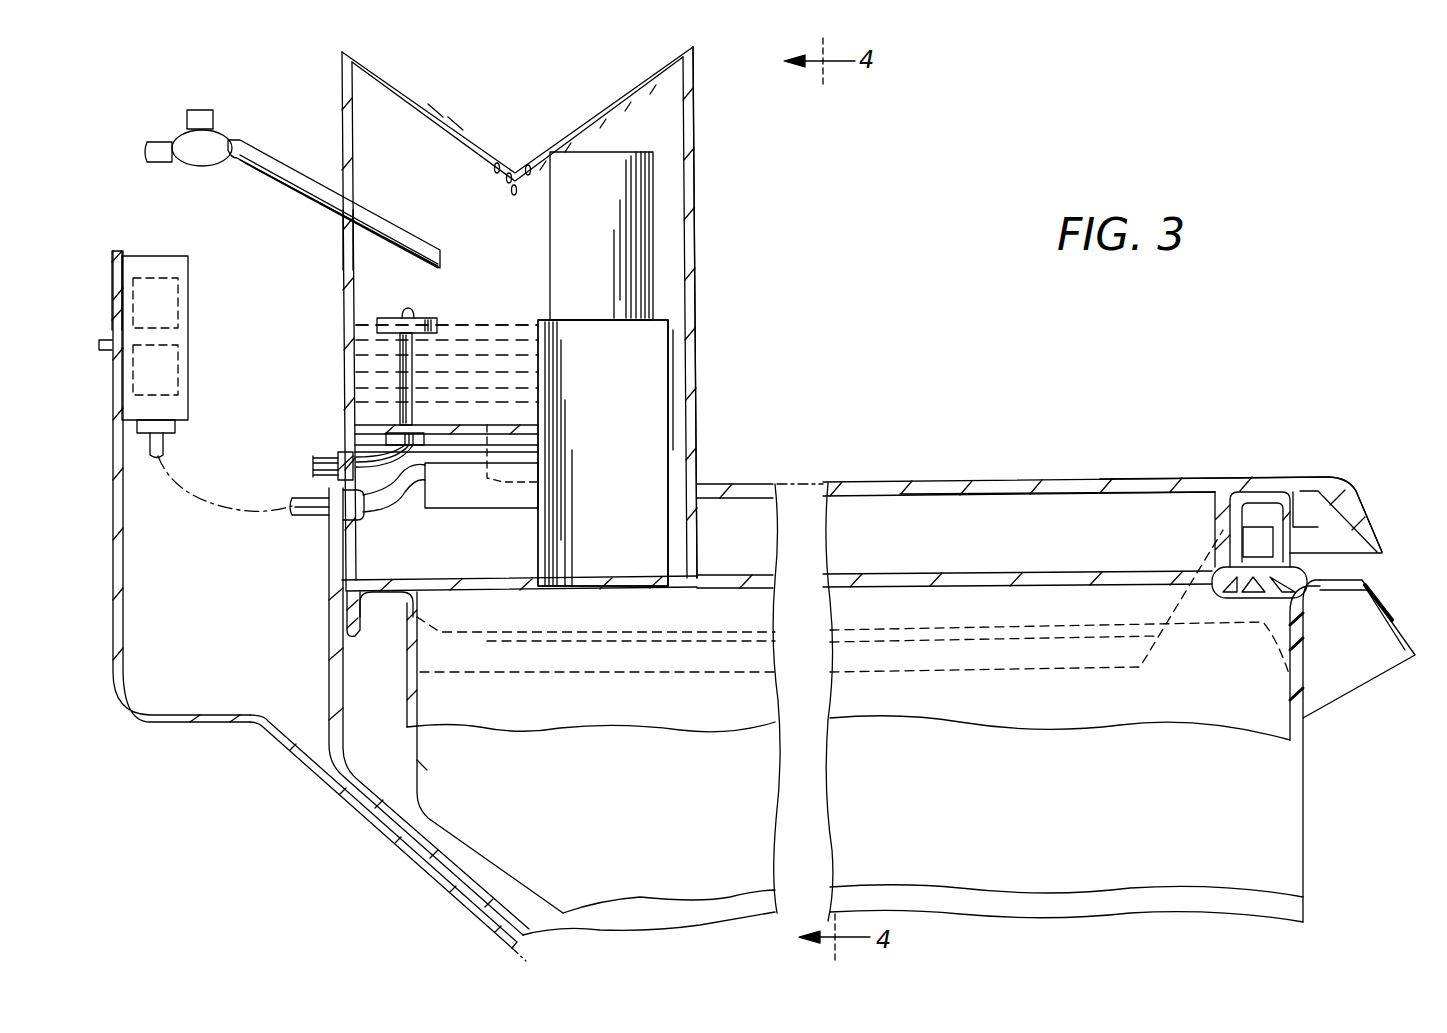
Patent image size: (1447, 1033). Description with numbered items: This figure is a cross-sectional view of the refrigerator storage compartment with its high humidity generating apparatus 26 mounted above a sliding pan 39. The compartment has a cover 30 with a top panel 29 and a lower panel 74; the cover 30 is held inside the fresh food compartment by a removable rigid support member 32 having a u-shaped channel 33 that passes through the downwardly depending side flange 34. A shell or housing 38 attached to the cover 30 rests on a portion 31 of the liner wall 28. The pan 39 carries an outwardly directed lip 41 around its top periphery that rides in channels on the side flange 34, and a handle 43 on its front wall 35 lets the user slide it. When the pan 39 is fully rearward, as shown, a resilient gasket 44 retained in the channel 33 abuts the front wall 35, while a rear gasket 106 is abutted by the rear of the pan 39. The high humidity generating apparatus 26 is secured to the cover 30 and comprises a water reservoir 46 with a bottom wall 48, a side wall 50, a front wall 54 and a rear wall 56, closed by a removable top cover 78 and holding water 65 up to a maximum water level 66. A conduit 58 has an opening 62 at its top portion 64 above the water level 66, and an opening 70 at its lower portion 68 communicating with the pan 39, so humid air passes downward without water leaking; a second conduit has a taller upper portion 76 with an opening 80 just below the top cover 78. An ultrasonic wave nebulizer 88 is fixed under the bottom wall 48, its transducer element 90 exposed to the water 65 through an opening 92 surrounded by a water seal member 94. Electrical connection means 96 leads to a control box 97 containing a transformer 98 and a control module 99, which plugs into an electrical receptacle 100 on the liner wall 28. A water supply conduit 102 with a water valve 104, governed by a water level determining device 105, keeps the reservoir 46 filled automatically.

The high humidity generating apparatus 26 is at (705, 115).
The liner wall 28 is at (123, 575).
The top panel 29 is at (1110, 478).
The cover 30 is at (958, 476).
The portion of the liner wall 31 is at (345, 830).
The rigid support member 32 is at (1255, 495).
The u-shaped channel 33 is at (1245, 510).
The side flange 34 is at (1000, 517).
The front wall 35 is at (1290, 703).
The shell or housing 38 is at (329, 736).
The pan 39 is at (558, 791).
The lip 41 is at (357, 600).
The handle 43 is at (1392, 604).
The resilient gasket 44 is at (1215, 600).
The water reservoir 46 is at (503, 234).
The bottom wall 48 is at (365, 427).
The side wall 50 is at (418, 157).
The front wall 54 is at (695, 252).
The rear wall 56 is at (342, 233).
The conduit 58 is at (678, 318).
The opening 62 is at (575, 320).
The top portion 64 is at (644, 345).
The water 65 is at (498, 368).
The maximum water level 66 is at (483, 323).
The lower portion 68 is at (630, 568).
The opening 70 is at (580, 591).
The lower panel 74 is at (905, 575).
The upper portion 76 is at (642, 230).
The top cover 78 is at (482, 136).
The opening 80 is at (640, 150).
The ultrasonic wave nebulizer 88 is at (412, 518).
The transducer element 90 is at (510, 480).
The opening 92 is at (492, 432).
The water seal member 94 is at (528, 447).
The electrical connection means 96 is at (300, 512).
The control box 97 is at (196, 298).
The transformer 98 is at (178, 278).
The control module 99 is at (178, 385).
The electrical receptacle 100 is at (112, 322).
The water supply conduit 102 is at (266, 152).
The water valve 104 is at (207, 168).
The water level determining device 105 is at (414, 312).
The gasket 106 is at (343, 618).